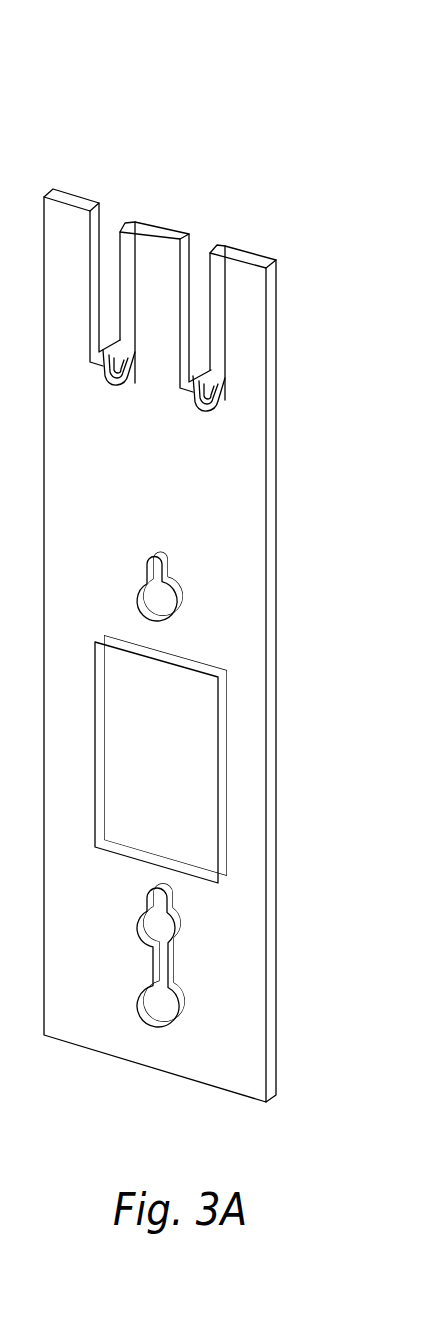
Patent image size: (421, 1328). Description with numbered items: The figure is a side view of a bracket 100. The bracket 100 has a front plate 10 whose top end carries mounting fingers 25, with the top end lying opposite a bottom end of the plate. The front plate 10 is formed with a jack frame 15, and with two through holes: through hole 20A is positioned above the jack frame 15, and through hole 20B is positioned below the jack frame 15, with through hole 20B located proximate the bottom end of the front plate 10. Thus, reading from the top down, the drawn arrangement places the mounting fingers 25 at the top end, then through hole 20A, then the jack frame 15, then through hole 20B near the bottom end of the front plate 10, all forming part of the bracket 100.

The bracket 100 is at (211, 557).
The front plate 10 is at (245, 468).
The mounting fingers 25 is at (248, 249).
The jack frame 15 is at (197, 752).
The through hole 20A is at (174, 591).
The through hole 20B is at (172, 988).